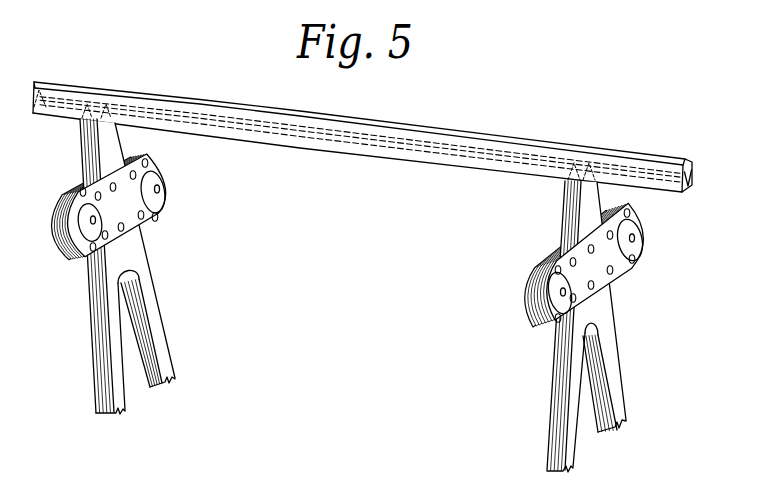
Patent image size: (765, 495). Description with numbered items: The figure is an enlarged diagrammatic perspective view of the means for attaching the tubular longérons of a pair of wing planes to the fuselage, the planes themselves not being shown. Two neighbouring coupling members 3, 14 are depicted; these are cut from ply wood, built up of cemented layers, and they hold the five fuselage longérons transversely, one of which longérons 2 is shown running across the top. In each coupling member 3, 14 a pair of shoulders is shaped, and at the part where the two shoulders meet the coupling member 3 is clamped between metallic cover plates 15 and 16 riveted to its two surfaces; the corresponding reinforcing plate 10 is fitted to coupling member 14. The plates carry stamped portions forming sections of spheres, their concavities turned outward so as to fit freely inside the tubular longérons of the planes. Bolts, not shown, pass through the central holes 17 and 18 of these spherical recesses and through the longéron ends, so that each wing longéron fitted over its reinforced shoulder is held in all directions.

The cross bar 2 is at (244, 141).
The coupling member 3 is at (615, 393).
The clamp plate 10 is at (149, 266).
The coupling member 14 is at (113, 283).
The metallic cover plate 15 is at (588, 326).
The metallic cover plate 16 is at (535, 261).
The central hole 17 is at (543, 327).
The central hole 18 is at (634, 240).